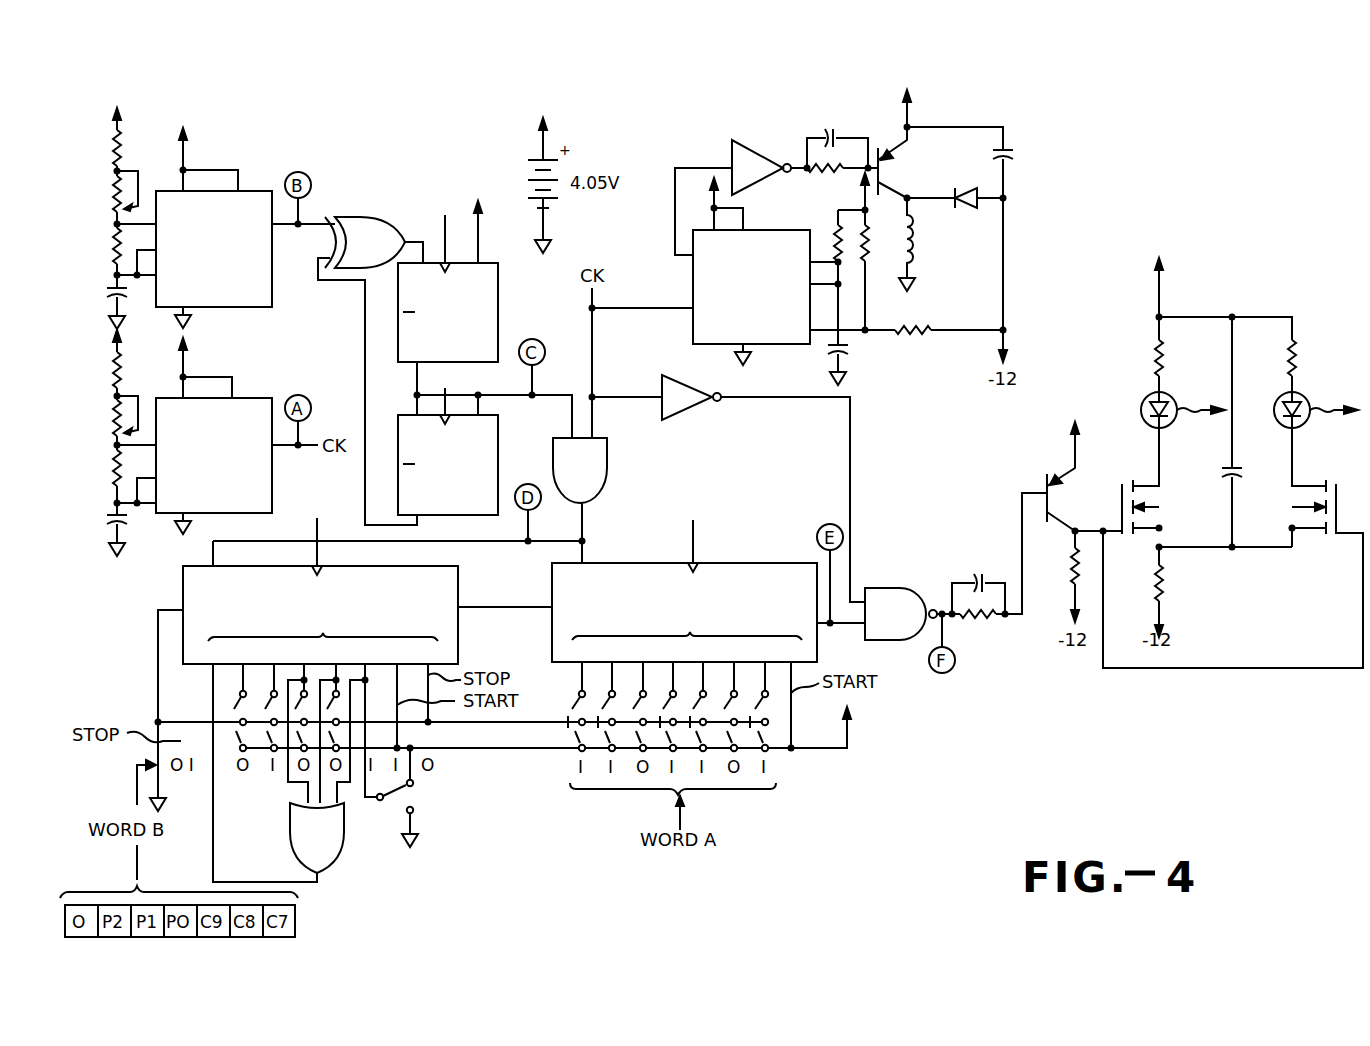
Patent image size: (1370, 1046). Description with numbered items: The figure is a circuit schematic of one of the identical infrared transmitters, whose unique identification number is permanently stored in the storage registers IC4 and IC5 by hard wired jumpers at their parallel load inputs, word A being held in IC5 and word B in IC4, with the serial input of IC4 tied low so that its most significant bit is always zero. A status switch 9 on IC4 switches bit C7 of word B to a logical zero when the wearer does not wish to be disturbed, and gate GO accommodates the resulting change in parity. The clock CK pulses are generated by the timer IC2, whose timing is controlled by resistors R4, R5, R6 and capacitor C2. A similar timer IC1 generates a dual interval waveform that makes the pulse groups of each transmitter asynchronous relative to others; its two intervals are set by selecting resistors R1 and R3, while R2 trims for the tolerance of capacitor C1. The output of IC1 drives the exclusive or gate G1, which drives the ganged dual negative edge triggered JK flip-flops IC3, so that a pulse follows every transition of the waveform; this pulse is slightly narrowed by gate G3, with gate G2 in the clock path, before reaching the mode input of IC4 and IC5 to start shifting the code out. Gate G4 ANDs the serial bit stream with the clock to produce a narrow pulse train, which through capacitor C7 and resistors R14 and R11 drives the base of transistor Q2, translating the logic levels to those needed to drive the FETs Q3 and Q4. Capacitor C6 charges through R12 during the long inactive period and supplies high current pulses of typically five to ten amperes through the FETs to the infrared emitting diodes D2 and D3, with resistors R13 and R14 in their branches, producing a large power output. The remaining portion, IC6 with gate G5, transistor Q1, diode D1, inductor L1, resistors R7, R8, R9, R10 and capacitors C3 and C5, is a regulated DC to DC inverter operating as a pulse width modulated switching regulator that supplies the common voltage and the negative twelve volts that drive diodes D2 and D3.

The status switch 9 is at (435, 767).
The timer IC1 is at (194, 228).
The timer IC2 is at (194, 436).
The JK flip-flops IC3 is at (485, 352).
The storage register IC4 is at (320, 579).
The storage register IC5 is at (684, 579).
The regulated DC to DC inverter IC6 is at (751, 271).
The exclusive or gate G1 is at (365, 242).
The gate G2 is at (691, 397).
The gate G3 is at (580, 470).
The gate G4 is at (901, 614).
The gate G5 is at (761, 167).
The gate GO is at (317, 838).
The transistor Q1 is at (902, 162).
The transistor Q2 is at (1079, 476).
The FET Q3 is at (1160, 481).
The FET Q4 is at (1330, 487).
The diode D1 is at (955, 185).
The infrared emitting diode D2 is at (1165, 410).
The infrared emitting diode D3 is at (1300, 408).
The inductor L1 is at (920, 244).
The resistor R1 is at (98, 142).
The resistor R2 is at (107, 199).
The resistor R3 is at (98, 258).
The resistor R4 is at (98, 365).
The resistor R5 is at (107, 423).
The resistor R6 is at (98, 482).
The resistor R7 is at (826, 182).
The resistor R8 is at (840, 297).
The resistor R9 is at (881, 251).
The resistor R10 is at (906, 343).
The resistor R11 is at (1056, 576).
The resistor R12 is at (1181, 592).
The resistor R13 is at (1140, 354).
The resistor R14 is at (1312, 366).
The capacitor C1 is at (99, 301).
The capacitor C2 is at (99, 534).
The capacitor C3 is at (837, 135).
The capacitor C5 is at (1022, 164).
The capacitor C6 is at (1239, 432).
The capacitor C7 is at (978, 584).